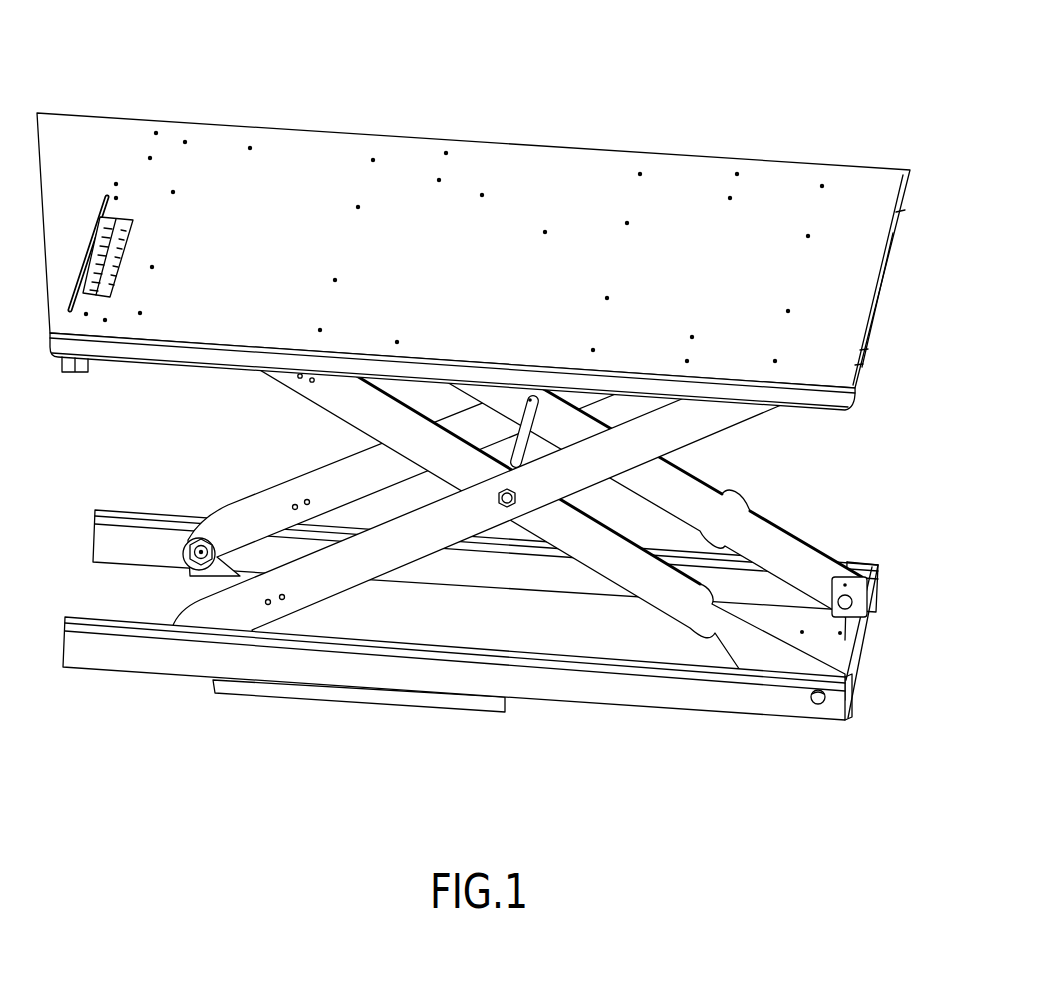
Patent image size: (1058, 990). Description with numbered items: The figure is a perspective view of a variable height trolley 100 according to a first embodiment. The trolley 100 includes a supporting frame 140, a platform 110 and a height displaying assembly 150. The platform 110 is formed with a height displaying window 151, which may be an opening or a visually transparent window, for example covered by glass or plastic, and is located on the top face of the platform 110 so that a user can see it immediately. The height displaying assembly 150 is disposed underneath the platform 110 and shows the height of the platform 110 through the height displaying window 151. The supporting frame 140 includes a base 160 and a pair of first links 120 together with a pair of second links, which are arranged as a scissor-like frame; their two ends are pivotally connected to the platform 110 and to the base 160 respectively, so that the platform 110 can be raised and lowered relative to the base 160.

The variable height trolley 100 is at (801, 134).
The platform 110 is at (541, 172).
The first links 120 is at (773, 547).
The supporting frame 140 is at (781, 733).
The height displaying assembly 150 is at (137, 246).
The height displaying window 151 is at (88, 252).
The base 160 is at (636, 683).